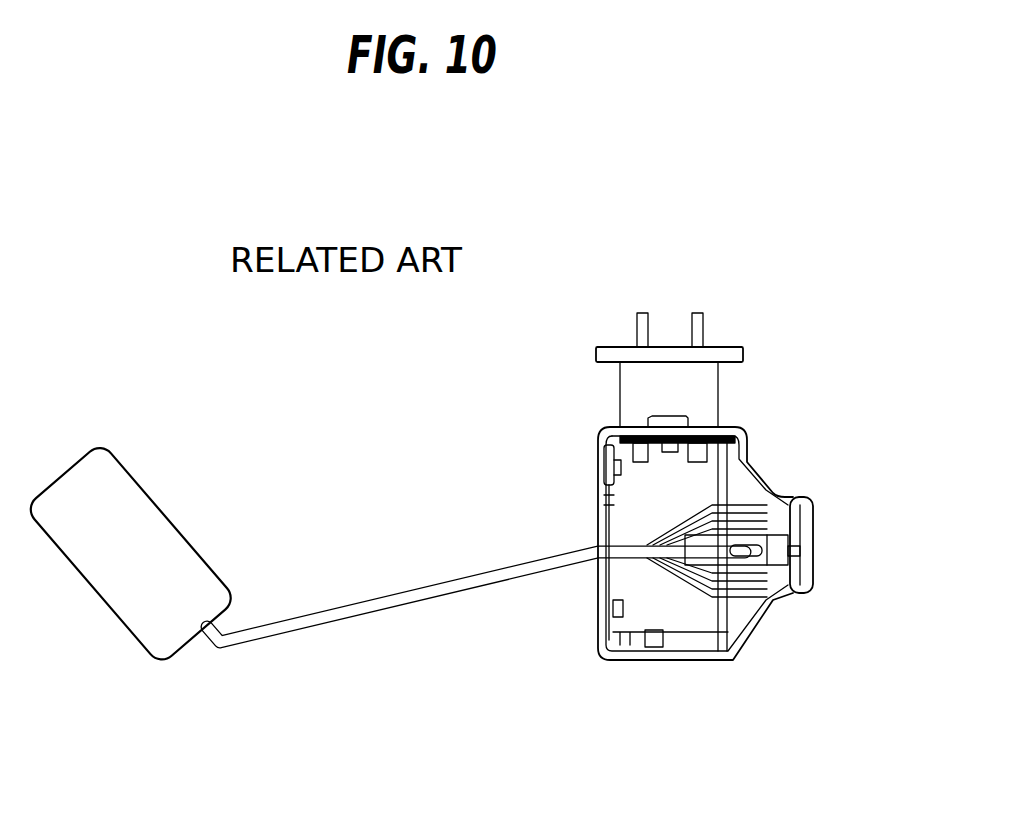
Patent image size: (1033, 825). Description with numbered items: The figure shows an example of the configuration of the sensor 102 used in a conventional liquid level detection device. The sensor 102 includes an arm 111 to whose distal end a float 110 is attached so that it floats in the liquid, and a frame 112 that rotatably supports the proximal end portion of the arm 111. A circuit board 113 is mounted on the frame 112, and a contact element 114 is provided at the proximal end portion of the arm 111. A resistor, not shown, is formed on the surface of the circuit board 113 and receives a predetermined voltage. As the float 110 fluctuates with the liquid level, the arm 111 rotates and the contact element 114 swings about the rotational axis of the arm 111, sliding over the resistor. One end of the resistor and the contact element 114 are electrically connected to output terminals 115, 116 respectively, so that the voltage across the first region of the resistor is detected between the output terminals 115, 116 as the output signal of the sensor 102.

The sensor 102 is at (675, 264).
The float 110 is at (153, 520).
The arm 111 is at (372, 611).
The frame 112 is at (718, 652).
The circuit board 113 is at (625, 593).
The contact element 114 is at (687, 580).
The output terminal 115 is at (635, 327).
The output terminal 116 is at (703, 327).